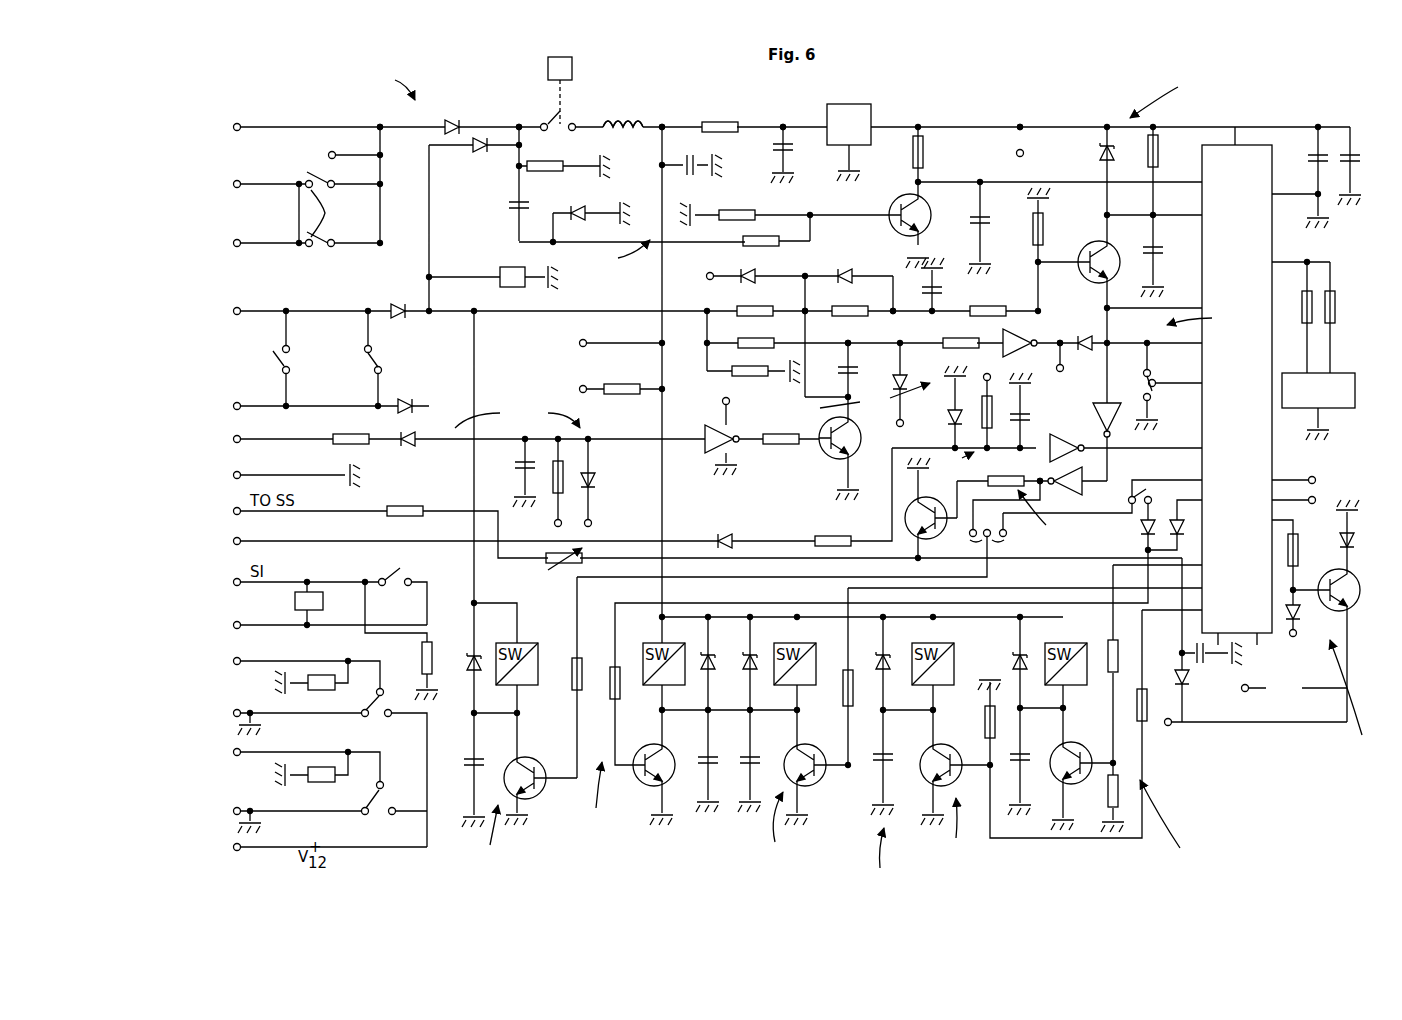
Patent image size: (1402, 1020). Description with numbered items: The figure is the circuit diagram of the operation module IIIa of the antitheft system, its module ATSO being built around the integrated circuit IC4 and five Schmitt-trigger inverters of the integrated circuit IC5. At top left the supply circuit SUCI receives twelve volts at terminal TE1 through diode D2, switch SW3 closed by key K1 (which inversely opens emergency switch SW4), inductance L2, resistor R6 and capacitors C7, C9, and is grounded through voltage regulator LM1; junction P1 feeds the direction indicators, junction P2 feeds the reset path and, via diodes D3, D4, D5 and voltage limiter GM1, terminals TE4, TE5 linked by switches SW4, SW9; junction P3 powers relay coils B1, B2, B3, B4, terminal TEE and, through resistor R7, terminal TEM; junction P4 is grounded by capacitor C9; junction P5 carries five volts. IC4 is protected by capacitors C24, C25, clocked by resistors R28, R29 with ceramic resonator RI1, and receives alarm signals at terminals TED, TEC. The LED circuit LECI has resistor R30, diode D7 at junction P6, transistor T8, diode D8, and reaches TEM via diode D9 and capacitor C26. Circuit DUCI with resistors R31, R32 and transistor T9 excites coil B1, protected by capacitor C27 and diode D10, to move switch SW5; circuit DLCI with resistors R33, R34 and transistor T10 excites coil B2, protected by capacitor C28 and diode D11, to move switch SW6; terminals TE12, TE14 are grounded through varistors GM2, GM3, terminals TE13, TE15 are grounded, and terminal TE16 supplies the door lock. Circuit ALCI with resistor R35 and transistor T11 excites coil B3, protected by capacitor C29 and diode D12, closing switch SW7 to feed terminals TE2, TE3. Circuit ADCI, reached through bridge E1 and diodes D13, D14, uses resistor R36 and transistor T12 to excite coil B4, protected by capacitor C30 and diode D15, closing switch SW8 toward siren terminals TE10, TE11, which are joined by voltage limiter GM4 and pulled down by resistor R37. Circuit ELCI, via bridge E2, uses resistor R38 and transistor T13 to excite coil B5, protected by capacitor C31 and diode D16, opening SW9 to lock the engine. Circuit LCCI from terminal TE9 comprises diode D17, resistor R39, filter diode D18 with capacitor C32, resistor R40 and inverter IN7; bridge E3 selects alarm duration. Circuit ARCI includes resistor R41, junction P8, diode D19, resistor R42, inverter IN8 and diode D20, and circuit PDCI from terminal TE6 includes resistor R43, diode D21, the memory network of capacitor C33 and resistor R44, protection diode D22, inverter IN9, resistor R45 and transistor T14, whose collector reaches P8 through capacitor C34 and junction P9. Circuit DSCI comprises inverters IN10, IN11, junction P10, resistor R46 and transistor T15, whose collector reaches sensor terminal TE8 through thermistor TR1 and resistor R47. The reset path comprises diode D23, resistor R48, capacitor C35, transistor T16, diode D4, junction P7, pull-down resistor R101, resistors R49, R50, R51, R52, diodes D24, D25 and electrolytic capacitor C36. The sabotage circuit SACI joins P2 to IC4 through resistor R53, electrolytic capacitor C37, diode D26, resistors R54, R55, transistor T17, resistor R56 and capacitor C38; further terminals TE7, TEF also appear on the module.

The integrated circuit IC4 is at (1237, 395).
The key K1 is at (572, 72).
The switch SW3 is at (555, 106).
The inductance L2 is at (620, 118).
The voltage regulator LM1 is at (849, 124).
The ceramic resonator RI1 is at (1318, 390).
The thermistor TR1 is at (553, 565).
The diode D2 is at (450, 122).
The diode D3 is at (476, 150).
The diode D4 is at (400, 305).
The diode D5 is at (406, 397).
The diode D7 is at (1298, 611).
The diode D8 is at (1352, 539).
The diode D9 is at (1178, 670).
The diode D10 is at (878, 665).
The diode D11 is at (1014, 664).
The diode D12 is at (748, 668).
The diode D13 is at (1145, 530).
The diode D14 is at (1172, 519).
The diode D15 is at (736, 656).
The diode D16 is at (470, 666).
The diode D17 is at (731, 534).
The diode D18 is at (992, 409).
The diode D19 is at (899, 377).
The diode D20 is at (1093, 338).
The diode D21 is at (410, 444).
The protection diode D22 is at (595, 480).
The diode D23 is at (1105, 158).
The diode D24 is at (749, 272).
The discharge diode D25 is at (845, 274).
The diode D26 is at (585, 206).
The resistor R6 is at (724, 120).
The resistor R7 is at (623, 385).
The resistor R28 is at (1306, 317).
The resistor R29 is at (1332, 310).
The resistor R30 is at (1293, 544).
The resistor R31 is at (1143, 710).
The resistor R32 is at (990, 720).
The resistor R33 is at (1112, 672).
The resistor R34 is at (1112, 790).
The resistor R35 is at (847, 690).
The resistor R36 is at (620, 692).
The pull-down resistor R37 is at (422, 662).
The resistor R38 is at (574, 680).
The resistor R39 is at (840, 535).
The resistor R40 is at (991, 419).
The resistor R41 is at (757, 340).
The resistor R42 is at (971, 338).
The resistor R43 is at (355, 434).
The resistor R44 is at (553, 494).
The resistor R45 is at (794, 433).
The resistor R46 is at (1010, 476).
The resistor R47 is at (410, 506).
The resistor R48 is at (1156, 152).
The resistor R49 is at (755, 317).
The resistor R50 is at (846, 306).
The resistor R51 is at (990, 304).
The resistor R52 is at (1043, 220).
The resistor R53 is at (570, 160).
The resistor R54 is at (763, 244).
The resistor R55 is at (745, 210).
The resistor R56 is at (923, 153).
The pull-down resistor R101 is at (743, 374).
The capacitor C7 is at (691, 164).
The capacitor C9 is at (782, 147).
The capacitor C24 is at (1315, 152).
The electrolytic capacitor C25 is at (1353, 152).
The capacitor C26 is at (1202, 658).
The capacitor C27 is at (885, 752).
The capacitor C28 is at (1021, 752).
The capacitor C29 is at (750, 758).
The capacitor C30 is at (708, 758).
The capacitor C31 is at (472, 760).
The capacitor C32 is at (1024, 414).
The capacitor C33 is at (522, 466).
The capacitor C34 is at (845, 369).
The capacitor C35 is at (1153, 250).
The electrolytic capacitor C36 is at (940, 290).
The electrolytic capacitor C37 is at (518, 205).
The capacitor C38 is at (980, 218).
The transistor T8 is at (1351, 598).
The transistor T9 is at (923, 784).
The transistor T10 is at (1063, 782).
The transistor T11 is at (820, 784).
The transistor T12 is at (646, 784).
The transistor T13 is at (536, 790).
The transistor T14 is at (840, 458).
The transistor T15 is at (929, 514).
The transistor T16 is at (1093, 286).
The transistor T17 is at (899, 206).
The inverter Schmitt trigger IN7 is at (1055, 437).
The inverter IN8 is at (1017, 334).
The inverter IN9 is at (704, 438).
The inverter IN10 is at (1098, 412).
The inverter IN11 is at (1069, 488).
The voltage limiter GM1 is at (508, 267).
The voltage limiter GM2 is at (316, 688).
The voltage limiter GM3 is at (316, 777).
The voltage limiter GM4 is at (295, 601).
The relay coil B1 is at (934, 642).
The relay coil B2 is at (1066, 644).
The relay coil B3 is at (788, 642).
The relay coil B4 is at (654, 642).
The relay coil B5 is at (524, 644).
The emergency switch SW4 is at (289, 360).
The switch SW5 is at (375, 720).
The switch SW6 is at (375, 816).
The switch SW7 is at (335, 214).
The switch SW8 is at (403, 571).
The switch SW9 is at (369, 372).
The bridge E1 is at (1137, 478).
The bridge E2 is at (1006, 546).
The bridge E3 is at (1154, 374).
The point P1 is at (380, 126).
The point P2 is at (519, 126).
The junction P3 is at (662, 126).
The junction P4 is at (783, 126).
The junction P5 is at (1020, 126).
The junction P6 is at (1285, 644).
The junction P7 is at (636, 309).
The junction P8 is at (848, 342).
The junction P9 is at (804, 310).
The junction P10 is at (893, 313).
The terminal TE1 is at (231, 127).
The terminal TE2 is at (231, 184).
The terminal TE3 is at (231, 243).
The terminal TE4 is at (231, 311).
The terminal TE5 is at (231, 406).
The terminal TE6 is at (231, 439).
The terminal TE7 is at (231, 475).
The terminal TE8 is at (231, 511).
The terminal TE9 is at (231, 541).
The terminal TE10 is at (232, 582).
The terminal TE11 is at (232, 625).
The terminal TE12 is at (232, 661).
The terminal TE13 is at (232, 713).
The terminal TE14 is at (232, 752).
The terminal TE15 is at (232, 811).
The terminal TE16 is at (232, 847).
The terminal TEF is at (328, 155).
The terminal TEE is at (579, 343).
The terminal TEM is at (579, 389).
The output terminal TED is at (1330, 481).
The output terminal TEC is at (1329, 501).
The supply circuit SUCI is at (384, 83).
The sabotage circuit SACI is at (615, 253).
The driver's door check circuit PDCI is at (517, 416).
The antirobbery circuit ARCI is at (1209, 319).
The integrated circuit IC5 is at (875, 396).
The lock check circuit LCCI is at (949, 459).
The arm/disarm circuit DSCI is at (1051, 514).
The engine lock circuit ELCI is at (478, 837).
The alarm siren circuit ADCI is at (594, 795).
The direction indicator flashing circuit ALCI is at (793, 827).
The operation module ATSO is at (857, 857).
The door unlock circuit DUCI is at (937, 830).
The door lock circuit DLCI is at (1180, 822).
The LED circuit LECI is at (1359, 697).
The operation module of the antitheft system IIIa is at (1155, 92).